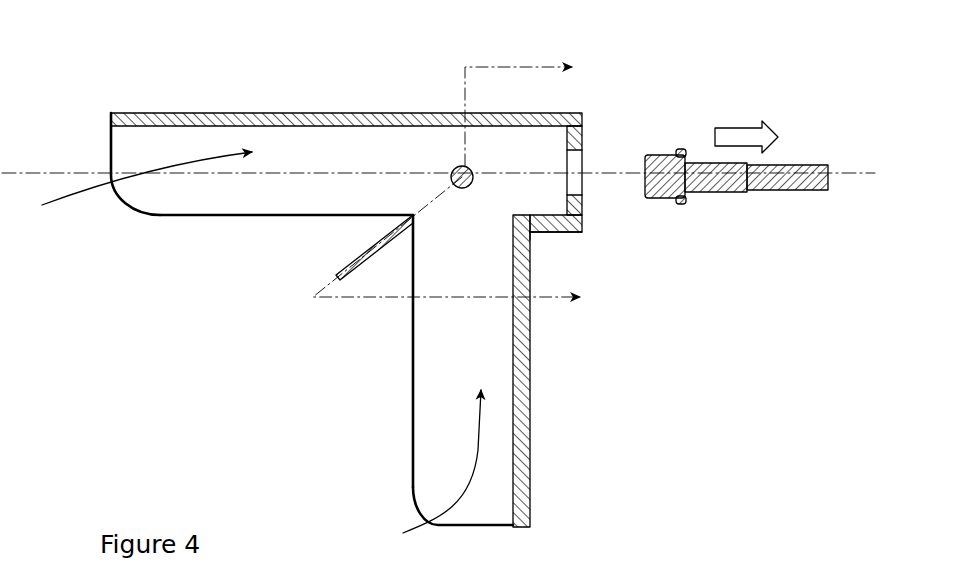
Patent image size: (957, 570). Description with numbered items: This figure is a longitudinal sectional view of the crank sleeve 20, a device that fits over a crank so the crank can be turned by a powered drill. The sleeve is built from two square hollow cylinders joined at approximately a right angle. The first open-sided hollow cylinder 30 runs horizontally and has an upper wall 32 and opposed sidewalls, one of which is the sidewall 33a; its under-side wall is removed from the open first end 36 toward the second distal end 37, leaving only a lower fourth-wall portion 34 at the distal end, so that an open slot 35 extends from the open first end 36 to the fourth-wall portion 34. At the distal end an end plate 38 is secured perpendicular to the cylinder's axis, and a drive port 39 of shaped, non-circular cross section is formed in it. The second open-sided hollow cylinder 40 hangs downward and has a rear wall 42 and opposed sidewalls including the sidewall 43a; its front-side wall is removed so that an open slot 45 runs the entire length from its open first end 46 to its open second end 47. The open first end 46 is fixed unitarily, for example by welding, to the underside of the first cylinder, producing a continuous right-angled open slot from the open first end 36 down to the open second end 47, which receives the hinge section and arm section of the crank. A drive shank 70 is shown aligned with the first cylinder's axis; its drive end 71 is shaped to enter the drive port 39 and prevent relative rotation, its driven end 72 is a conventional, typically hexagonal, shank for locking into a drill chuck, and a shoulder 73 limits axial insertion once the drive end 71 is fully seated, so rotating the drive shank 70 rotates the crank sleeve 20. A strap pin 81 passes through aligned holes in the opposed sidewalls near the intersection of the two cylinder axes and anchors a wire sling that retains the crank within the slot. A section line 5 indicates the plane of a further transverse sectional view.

The section line 5 is at (446, 179).
The crank sleeve 20 is at (622, 62).
The first open-sided hollow cylinder 30 is at (205, 92).
The upper wall 32 is at (331, 113).
The sidewall 33a is at (190, 182).
The lower fourth-wall portion 34 is at (557, 232).
The open slot 35 is at (127, 191).
The open first end 36 is at (110, 138).
The second distal end 37 is at (580, 222).
The end plate 38 is at (582, 137).
The drive port 39 is at (585, 165).
The second open-sided hollow cylinder 40 is at (562, 415).
The rear wall 42 is at (530, 365).
The sidewall 43a is at (438, 416).
The open slot 45 is at (421, 475).
The open first end 46 is at (530, 233).
The second end 47 is at (478, 525).
The drive shank 70 is at (748, 105).
The drive end 71 is at (662, 205).
The driven end 72 is at (773, 163).
The shoulder 73 is at (683, 203).
The strap pin 81 is at (457, 166).